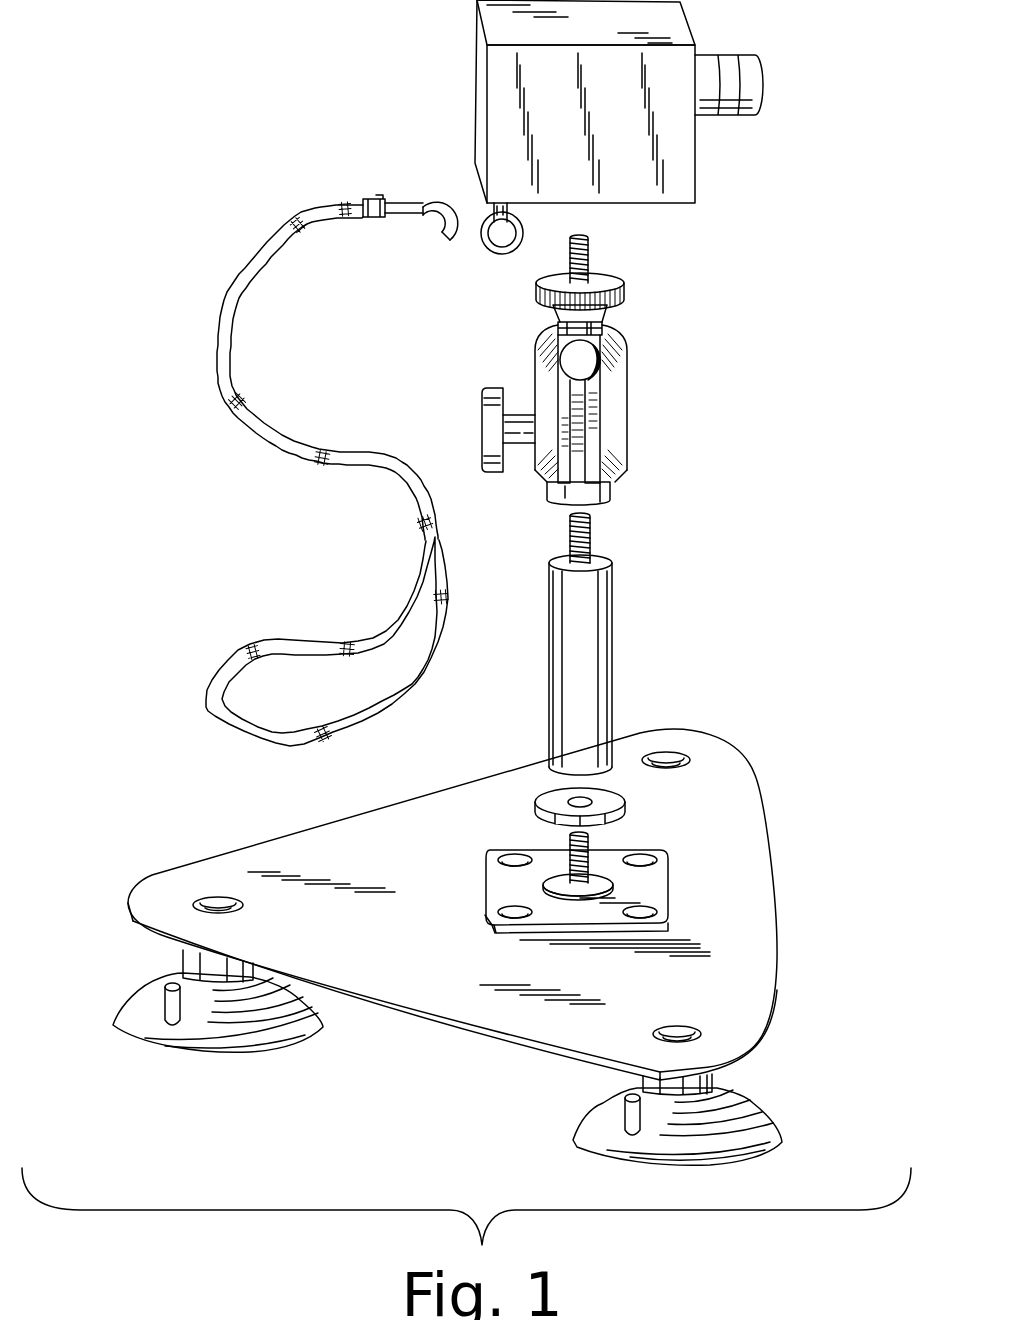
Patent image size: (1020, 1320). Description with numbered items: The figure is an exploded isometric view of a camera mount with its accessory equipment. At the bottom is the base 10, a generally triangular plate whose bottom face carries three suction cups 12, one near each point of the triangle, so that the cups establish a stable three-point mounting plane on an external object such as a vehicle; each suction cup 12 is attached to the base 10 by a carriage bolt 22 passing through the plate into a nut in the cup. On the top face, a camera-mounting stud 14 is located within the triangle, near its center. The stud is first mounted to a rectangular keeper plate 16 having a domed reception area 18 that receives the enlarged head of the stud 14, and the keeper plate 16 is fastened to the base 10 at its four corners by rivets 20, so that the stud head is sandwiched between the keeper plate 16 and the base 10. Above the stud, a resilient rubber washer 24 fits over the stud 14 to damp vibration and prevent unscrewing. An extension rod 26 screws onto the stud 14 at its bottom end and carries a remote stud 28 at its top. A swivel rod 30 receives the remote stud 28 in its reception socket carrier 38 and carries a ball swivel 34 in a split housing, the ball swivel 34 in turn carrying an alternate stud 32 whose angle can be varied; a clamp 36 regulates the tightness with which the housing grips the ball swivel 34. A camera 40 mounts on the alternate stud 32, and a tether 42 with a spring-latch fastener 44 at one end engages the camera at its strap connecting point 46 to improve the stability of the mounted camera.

The base 10 is at (200, 863).
The suction cups 12 is at (137, 1008).
The camera-mounting stud 14 is at (568, 845).
The keeper plate 16 is at (655, 872).
The domed reception area 18 is at (600, 886).
The rivets 20 is at (500, 913).
The carriage bolt 22 is at (193, 906).
The resilient washer 24 is at (613, 800).
The extension rod 26 is at (610, 600).
The remote stud 28 is at (590, 530).
The swivel rod 30 is at (617, 393).
The alternate stud 32 is at (590, 242).
The ball swivel 34 is at (573, 369).
The clamp 36 is at (480, 428).
The reception socket carrier 38 is at (607, 484).
The camera 40 is at (487, 75).
The tether 42 is at (283, 241).
The fastener 44 is at (423, 233).
The connecting point 46 is at (483, 212).